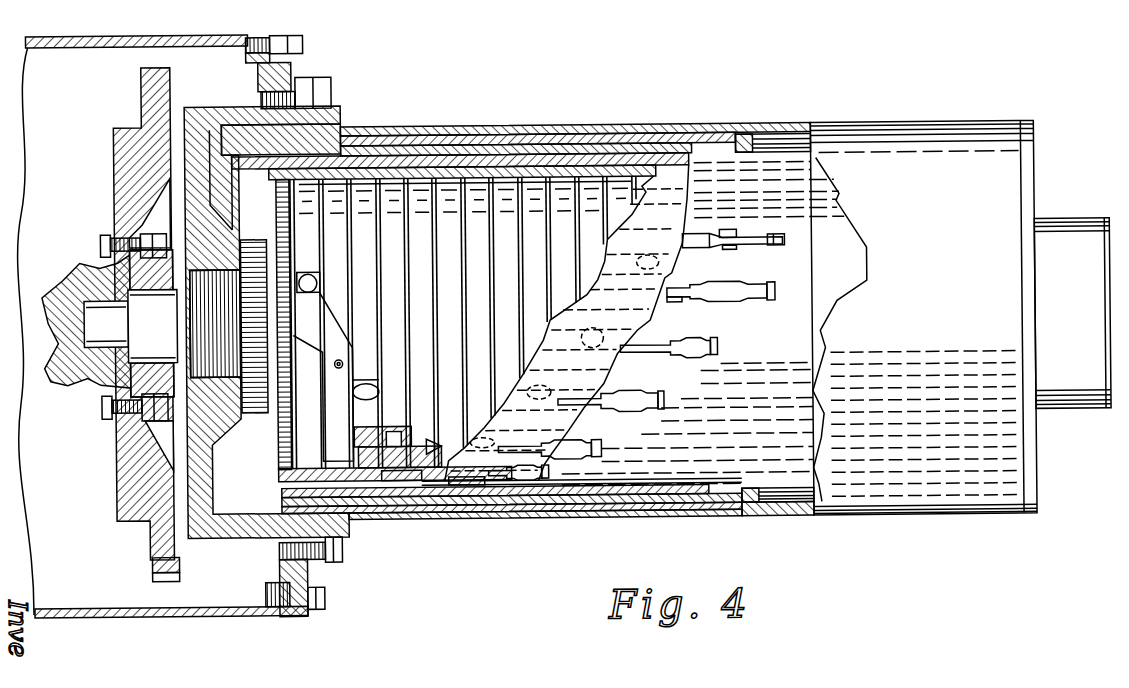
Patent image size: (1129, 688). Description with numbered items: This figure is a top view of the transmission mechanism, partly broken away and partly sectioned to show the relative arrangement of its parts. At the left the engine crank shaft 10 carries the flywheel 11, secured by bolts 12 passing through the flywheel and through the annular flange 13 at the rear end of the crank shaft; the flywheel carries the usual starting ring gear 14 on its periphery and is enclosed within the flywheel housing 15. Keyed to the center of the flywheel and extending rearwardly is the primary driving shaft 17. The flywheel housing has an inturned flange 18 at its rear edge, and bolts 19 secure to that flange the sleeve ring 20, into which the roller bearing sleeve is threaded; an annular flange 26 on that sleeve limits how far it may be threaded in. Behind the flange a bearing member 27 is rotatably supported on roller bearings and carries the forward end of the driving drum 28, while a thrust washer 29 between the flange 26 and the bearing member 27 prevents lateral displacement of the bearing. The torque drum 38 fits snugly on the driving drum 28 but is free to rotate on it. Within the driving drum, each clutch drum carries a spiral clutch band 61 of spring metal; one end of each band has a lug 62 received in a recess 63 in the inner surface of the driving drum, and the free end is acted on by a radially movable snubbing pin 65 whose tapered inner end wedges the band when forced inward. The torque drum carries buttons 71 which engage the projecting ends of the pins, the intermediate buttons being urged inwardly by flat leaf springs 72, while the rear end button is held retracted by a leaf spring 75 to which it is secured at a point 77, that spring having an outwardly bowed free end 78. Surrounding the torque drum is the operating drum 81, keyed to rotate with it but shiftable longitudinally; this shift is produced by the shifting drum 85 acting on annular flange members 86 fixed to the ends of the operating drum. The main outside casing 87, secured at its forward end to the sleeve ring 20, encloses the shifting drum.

The crank shaft 10 is at (66, 379).
The flywheel 11 is at (135, 497).
The bolts 12 is at (115, 402).
The annular flange 13 is at (106, 259).
The starting ring gear 14 is at (160, 580).
The flywheel housing 15 is at (105, 614).
The primary driving shaft 17 is at (162, 324).
The inturned flange 18 is at (262, 588).
The bolts 19 is at (322, 599).
The sleeve ring 20 is at (196, 537).
The annular flange 26 is at (258, 273).
The bearing member 27 is at (300, 453).
The driving drum 28 is at (393, 174).
The thrust washer 29 is at (288, 398).
The torque drum 38 is at (447, 161).
The clutch band 61 is at (464, 322).
The lug 62 is at (370, 389).
The recess or socket 63 is at (658, 246).
The snubbing pins 65 is at (396, 478).
The buttons 71 is at (728, 253).
The flat leaf springs 72 is at (722, 301).
The leaf spring 75 is at (690, 241).
The button securement point 77 is at (733, 235).
The outwardly bowed free end 78 is at (768, 249).
The operating drum 81 is at (523, 144).
The shifting drum 85 is at (582, 142).
The annular flange members 86 is at (760, 148).
The main outside casing 87 is at (648, 130).